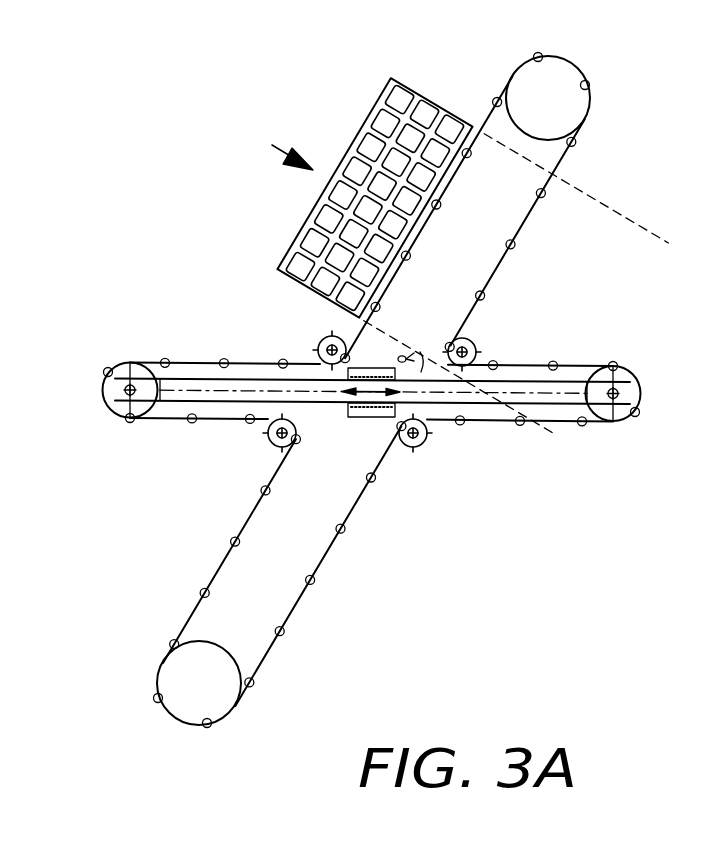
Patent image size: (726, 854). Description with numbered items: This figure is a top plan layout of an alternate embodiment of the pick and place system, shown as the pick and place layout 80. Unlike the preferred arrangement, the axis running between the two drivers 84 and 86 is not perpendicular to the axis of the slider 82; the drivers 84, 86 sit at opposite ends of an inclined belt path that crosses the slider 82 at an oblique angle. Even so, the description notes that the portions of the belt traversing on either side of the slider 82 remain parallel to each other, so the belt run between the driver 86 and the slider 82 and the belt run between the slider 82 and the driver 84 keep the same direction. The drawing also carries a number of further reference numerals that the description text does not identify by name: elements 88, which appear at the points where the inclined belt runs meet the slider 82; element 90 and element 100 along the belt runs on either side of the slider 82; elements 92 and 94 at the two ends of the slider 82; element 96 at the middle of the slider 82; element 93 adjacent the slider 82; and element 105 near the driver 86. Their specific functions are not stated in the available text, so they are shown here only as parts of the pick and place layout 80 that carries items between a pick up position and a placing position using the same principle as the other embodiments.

The pick and place layout 80 is at (605, 147).
The slider 82 is at (485, 404).
The driver 84 is at (183, 712).
The driver 86 is at (567, 70).
The idler pulleys 88 is at (330, 339).
The lower belt 90 is at (360, 502).
The left conveyor pulley 92 is at (115, 401).
The belt marker 93 is at (397, 351).
The right conveyor pulley 94 is at (620, 418).
The clamp block 96 is at (368, 417).
The upper belt 100 is at (409, 258).
The tray 105 is at (421, 92).